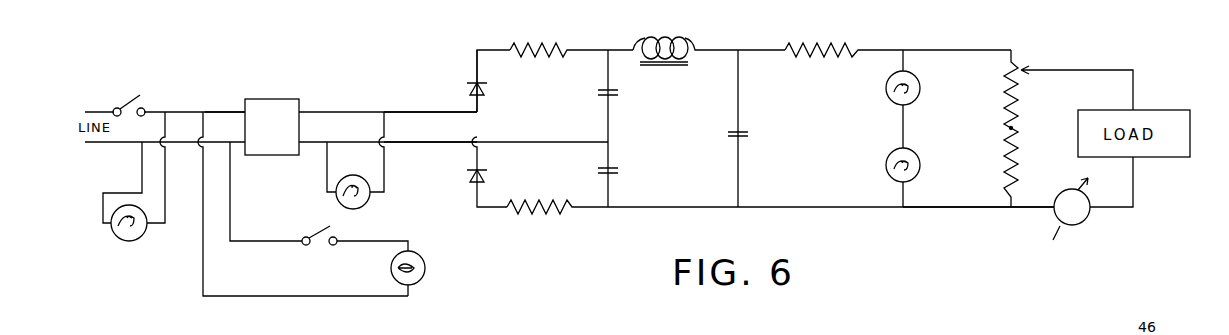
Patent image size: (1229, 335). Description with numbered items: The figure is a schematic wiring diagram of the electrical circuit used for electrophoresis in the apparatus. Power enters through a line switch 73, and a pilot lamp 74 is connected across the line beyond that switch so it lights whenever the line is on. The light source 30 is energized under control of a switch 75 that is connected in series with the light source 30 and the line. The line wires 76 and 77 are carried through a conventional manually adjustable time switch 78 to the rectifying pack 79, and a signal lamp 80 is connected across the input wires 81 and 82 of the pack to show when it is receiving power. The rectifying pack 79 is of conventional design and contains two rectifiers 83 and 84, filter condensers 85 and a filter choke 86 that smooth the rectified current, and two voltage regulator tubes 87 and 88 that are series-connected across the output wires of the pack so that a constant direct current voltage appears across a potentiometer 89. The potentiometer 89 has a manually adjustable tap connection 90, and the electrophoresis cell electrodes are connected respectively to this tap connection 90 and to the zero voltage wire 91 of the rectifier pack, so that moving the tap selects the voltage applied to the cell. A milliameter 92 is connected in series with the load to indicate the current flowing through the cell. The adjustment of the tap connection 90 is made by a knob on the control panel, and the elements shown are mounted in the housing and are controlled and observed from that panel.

The light source 30 is at (425, 268).
The line switch 73 is at (124, 96).
The pilot lamp 74 is at (129, 241).
The switch 75 is at (318, 225).
The line wire 76 is at (222, 111).
The line wire 77 is at (232, 144).
The time switch 78 is at (276, 99).
The rectifying pack 79 is at (486, 36).
The signal lamp 80 is at (368, 200).
The input wire 81 is at (400, 111).
The input wire 82 is at (403, 143).
The rectifier 83 is at (487, 87).
The rectifier 84 is at (487, 172).
The filter condensers 85 is at (730, 138).
The filter choke 86 is at (666, 38).
The voltage regulator tube 87 is at (920, 93).
The voltage regulator tube 88 is at (921, 168).
The potentiometer 89 is at (1006, 113).
The tap connection 90 is at (1024, 68).
The zero voltage wire 91 is at (968, 208).
The milliameter 92 is at (1088, 218).